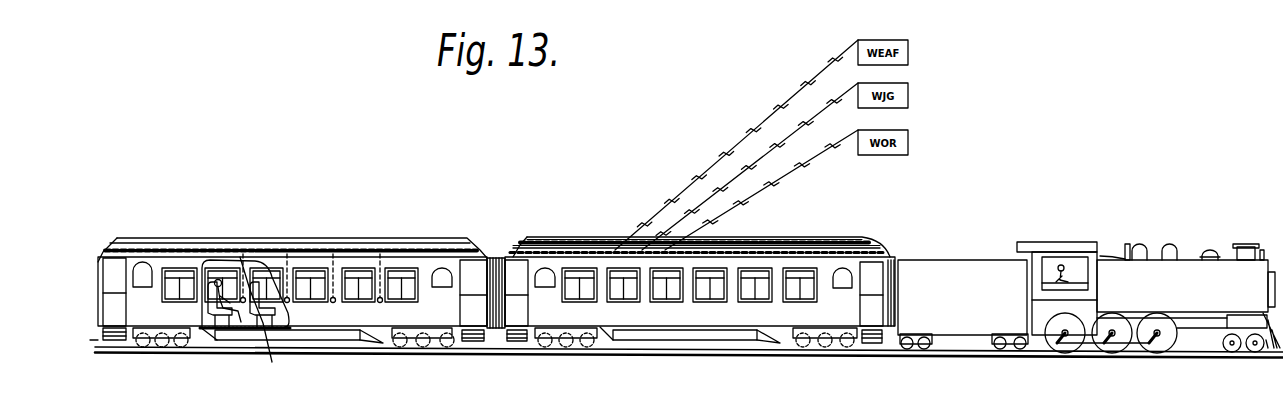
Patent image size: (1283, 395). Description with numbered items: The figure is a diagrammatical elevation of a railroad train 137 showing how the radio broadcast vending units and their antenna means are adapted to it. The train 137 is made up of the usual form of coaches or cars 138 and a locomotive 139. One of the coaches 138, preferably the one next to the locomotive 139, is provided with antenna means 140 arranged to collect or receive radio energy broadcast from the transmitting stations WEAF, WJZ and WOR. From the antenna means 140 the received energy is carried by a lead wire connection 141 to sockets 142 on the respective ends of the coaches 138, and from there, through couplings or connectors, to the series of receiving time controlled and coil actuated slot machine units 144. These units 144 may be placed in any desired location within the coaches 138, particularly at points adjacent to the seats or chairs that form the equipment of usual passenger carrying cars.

The railroad train 137 is at (685, 285).
The coaches or cars 138 is at (223, 240).
The locomotive 139 is at (1052, 240).
The antenna means 140 is at (810, 252).
The lead wire connection 141 is at (363, 252).
The sockets 142 is at (505, 257).
The receiving time controlled and coil actuated slot machine units 144 is at (330, 305).